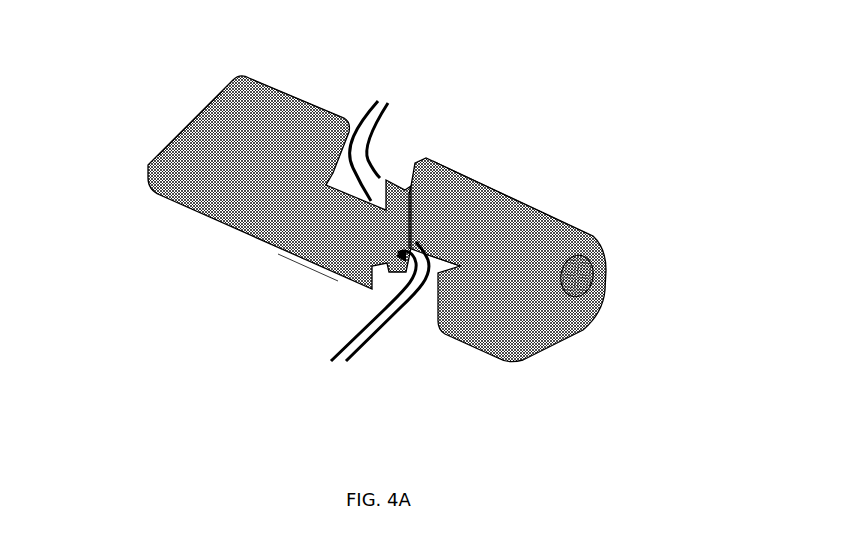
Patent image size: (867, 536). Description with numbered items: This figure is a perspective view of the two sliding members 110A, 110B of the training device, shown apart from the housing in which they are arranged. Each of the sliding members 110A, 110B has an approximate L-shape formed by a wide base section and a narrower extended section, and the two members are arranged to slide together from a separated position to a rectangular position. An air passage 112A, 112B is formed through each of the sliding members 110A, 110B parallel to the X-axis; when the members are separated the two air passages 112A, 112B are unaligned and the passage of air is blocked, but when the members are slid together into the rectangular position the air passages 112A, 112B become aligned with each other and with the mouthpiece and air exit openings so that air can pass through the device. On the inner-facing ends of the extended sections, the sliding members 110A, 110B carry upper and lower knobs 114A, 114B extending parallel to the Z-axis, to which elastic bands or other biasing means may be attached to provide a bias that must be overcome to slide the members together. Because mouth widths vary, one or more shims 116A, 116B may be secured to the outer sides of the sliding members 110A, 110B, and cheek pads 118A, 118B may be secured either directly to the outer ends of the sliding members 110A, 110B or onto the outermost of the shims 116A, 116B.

The sliding member 110A is at (193, 210).
The sliding member 110B is at (482, 343).
The air passage 112A is at (290, 257).
The air passage 112B is at (430, 257).
The upper and lower knobs 114A is at (366, 315).
The upper and lower knobs 114B is at (377, 139).
The shim 116A is at (242, 77).
The shim 116B is at (532, 207).
The cheek pad 118A is at (177, 112).
The cheek pad 118B is at (557, 310).